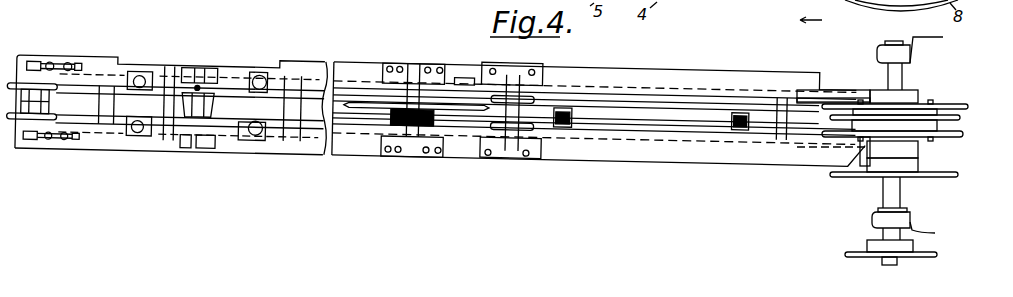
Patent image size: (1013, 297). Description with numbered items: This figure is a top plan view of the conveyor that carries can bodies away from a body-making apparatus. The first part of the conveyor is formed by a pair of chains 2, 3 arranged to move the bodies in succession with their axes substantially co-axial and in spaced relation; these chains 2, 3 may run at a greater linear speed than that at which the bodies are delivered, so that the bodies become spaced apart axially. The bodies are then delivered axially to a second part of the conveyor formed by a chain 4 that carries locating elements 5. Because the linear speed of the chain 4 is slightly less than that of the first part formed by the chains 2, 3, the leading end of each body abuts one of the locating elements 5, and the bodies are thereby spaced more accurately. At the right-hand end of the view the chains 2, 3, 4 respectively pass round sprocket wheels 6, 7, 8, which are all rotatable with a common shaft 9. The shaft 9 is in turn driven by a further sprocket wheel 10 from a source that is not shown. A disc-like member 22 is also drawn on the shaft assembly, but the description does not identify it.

The chain 2 is at (683, 100).
The chain 3 is at (707, 128).
The chain 4 is at (705, 113).
The locating element 5 is at (737, 115).
The sprocket wheel 6 is at (967, 109).
The sprocket wheel 7 is at (963, 136).
The sprocket wheel 8 is at (961, 119).
The shaft 9 is at (895, 80).
The sprocket wheel 10 is at (860, 247).
The disc 22 is at (943, 178).